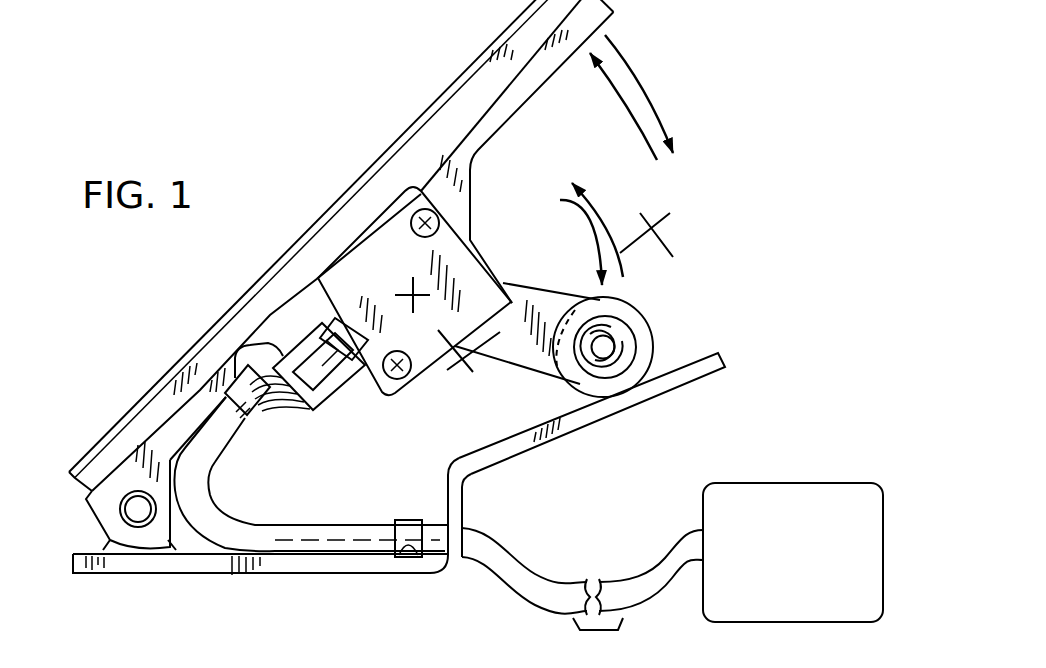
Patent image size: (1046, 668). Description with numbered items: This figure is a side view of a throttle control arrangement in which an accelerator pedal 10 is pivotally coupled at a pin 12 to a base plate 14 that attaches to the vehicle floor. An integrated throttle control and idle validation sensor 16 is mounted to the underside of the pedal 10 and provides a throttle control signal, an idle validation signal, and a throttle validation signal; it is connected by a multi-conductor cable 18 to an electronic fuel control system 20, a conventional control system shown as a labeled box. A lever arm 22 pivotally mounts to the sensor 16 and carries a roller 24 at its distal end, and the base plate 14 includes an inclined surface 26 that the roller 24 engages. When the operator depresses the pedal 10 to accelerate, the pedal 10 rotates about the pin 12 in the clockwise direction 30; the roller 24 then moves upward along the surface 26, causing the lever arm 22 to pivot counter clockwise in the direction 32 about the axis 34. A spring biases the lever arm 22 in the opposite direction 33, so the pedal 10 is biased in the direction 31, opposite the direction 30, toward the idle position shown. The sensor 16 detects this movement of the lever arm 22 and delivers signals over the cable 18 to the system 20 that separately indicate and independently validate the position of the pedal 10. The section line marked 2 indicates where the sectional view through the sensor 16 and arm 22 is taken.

The section line 2- 2 is at (323, 180).
The accelerator pedal 10 is at (446, 74).
The pin 12 is at (139, 511).
The base plate 14 is at (359, 572).
The integrated throttle control and idle validation sensor 16 is at (462, 274).
The multi-conductor cable 18 is at (287, 535).
The electronic fuel control system 20 is at (742, 483).
The lever arm 22 is at (528, 345).
The roller 24 is at (640, 302).
The inclined surface 26 is at (690, 358).
The direction 30 is at (653, 99).
The direction 31 is at (632, 100).
The direction 32 is at (600, 217).
The direction 33 is at (580, 232).
The axis 34 is at (410, 290).